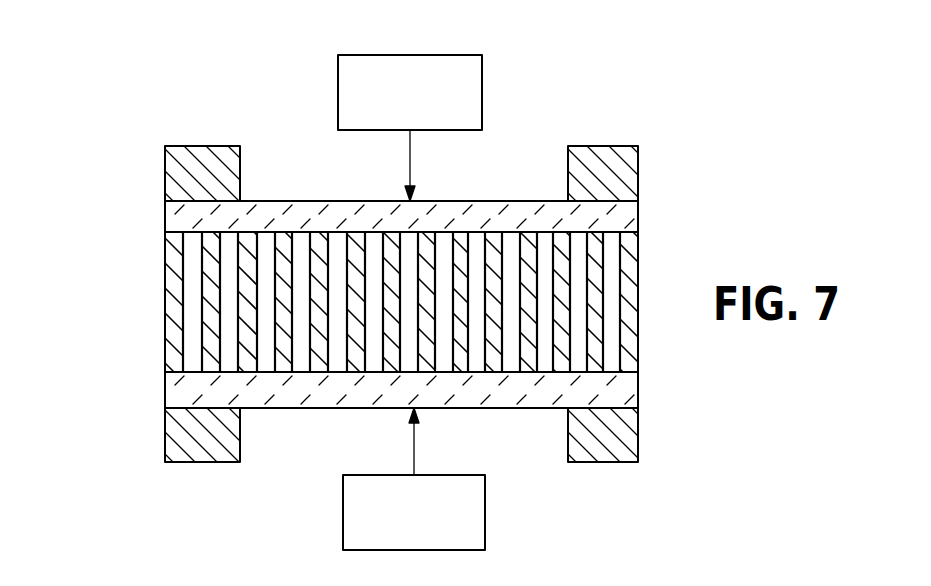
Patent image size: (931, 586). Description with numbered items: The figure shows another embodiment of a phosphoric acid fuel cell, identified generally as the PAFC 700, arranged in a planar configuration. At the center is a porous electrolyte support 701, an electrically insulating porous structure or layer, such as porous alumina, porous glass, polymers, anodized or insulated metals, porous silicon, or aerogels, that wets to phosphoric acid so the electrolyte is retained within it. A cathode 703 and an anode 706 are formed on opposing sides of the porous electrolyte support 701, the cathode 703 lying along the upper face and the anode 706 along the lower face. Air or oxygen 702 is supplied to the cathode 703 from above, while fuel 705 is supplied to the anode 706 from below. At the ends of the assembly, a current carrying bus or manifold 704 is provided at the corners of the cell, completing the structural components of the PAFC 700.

The phosphoric acid fuel cell 700 is at (213, 93).
The porous electrolyte support 701 is at (165, 310).
The air or oxygen 702 is at (482, 93).
The cathode 703 is at (290, 200).
The current carrying bus or manifold 704 is at (165, 432).
The fuel 705 is at (485, 516).
The anode 706 is at (306, 408).